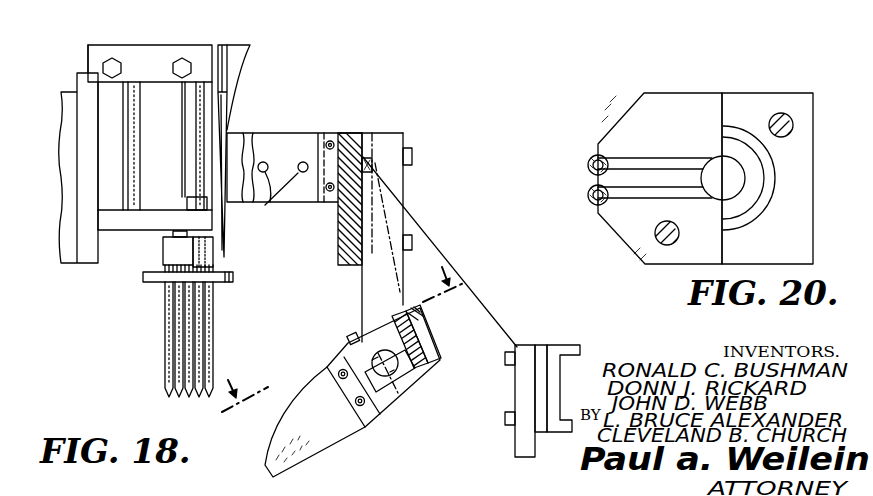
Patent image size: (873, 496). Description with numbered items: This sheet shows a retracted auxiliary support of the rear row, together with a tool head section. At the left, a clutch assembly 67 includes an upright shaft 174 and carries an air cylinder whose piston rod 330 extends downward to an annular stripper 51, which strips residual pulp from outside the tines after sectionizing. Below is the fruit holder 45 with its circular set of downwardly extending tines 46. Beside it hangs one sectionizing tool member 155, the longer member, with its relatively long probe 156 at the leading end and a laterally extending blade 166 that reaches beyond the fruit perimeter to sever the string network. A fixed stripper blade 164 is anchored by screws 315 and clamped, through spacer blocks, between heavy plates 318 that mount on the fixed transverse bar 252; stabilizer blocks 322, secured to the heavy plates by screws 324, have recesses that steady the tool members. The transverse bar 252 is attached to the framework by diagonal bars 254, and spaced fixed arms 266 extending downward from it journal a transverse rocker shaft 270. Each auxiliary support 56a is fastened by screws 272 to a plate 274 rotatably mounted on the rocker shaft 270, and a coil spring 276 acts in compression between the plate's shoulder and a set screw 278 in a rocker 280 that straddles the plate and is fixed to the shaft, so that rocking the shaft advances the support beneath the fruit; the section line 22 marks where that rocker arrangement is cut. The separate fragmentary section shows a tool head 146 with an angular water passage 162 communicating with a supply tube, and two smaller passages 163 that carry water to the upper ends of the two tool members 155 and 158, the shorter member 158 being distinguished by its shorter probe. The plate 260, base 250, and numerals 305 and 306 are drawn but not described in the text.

In FIG. 18, the clutch assembly 67 is at (100, 41).
In FIG. 18, the upright shaft 174 is at (133, 142).
In FIG. 18, the piston rod 330 is at (197, 151).
In FIG. 18, the fruit holder 45 is at (160, 255).
In FIG. 18, the annular stripper 51 is at (143, 279).
In FIG. 18, the tines 46 is at (165, 332).
In FIG. 18, the probe 156 is at (226, 108).
In FIG. 18, the blade 166 is at (247, 47).
In FIG. 18, the sectionizing tool member 155 is at (247, 58).
In FIG. 20, the sectionizing tool member 155 is at (578, 197).
In FIG. 18, the stripper blade 164 is at (236, 138).
In FIG. 18, the stabilizer block 322 is at (250, 152).
In FIG. 18, the screws 324 is at (270, 204).
In FIG. 18, the heavy plate 318 is at (310, 195).
In FIG. 18, the screws 315 is at (332, 145).
In FIG. 18, the fixed transverse bar 252 is at (345, 258).
In FIG. 18, the vertical plate 260 is at (366, 156).
In FIG. 18, the fixed arms 266 is at (393, 168).
In FIG. 18, the diagonal bars 254 is at (488, 400).
In FIG. 18, the section line 22- 22 is at (369, 347).
In FIG. 18, the plate 274 is at (348, 355).
In FIG. 18, the base plate 250 is at (350, 427).
In FIG. 18, the screws 272 is at (340, 372).
In FIG. 18, the rocker shaft 270 is at (388, 370).
In FIG. 18, the set screw 278 is at (397, 313).
In FIG. 18, the coil spring 276 is at (417, 342).
In FIG. 18, the rocker 280 is at (430, 349).
In FIG. 18, the auxiliary support 56a is at (297, 455).
In FIG. 20, the tool head 146 is at (708, 88).
In FIG. 20, the angular water passage 162 is at (723, 167).
In FIG. 20, the passages 163 is at (641, 191).
In FIG. 20, the sectionizing tool member 158 is at (584, 151).
In FIG. 20, the element 305 is at (613, 0).
In FIG. 20, the element 306 is at (695, 0).